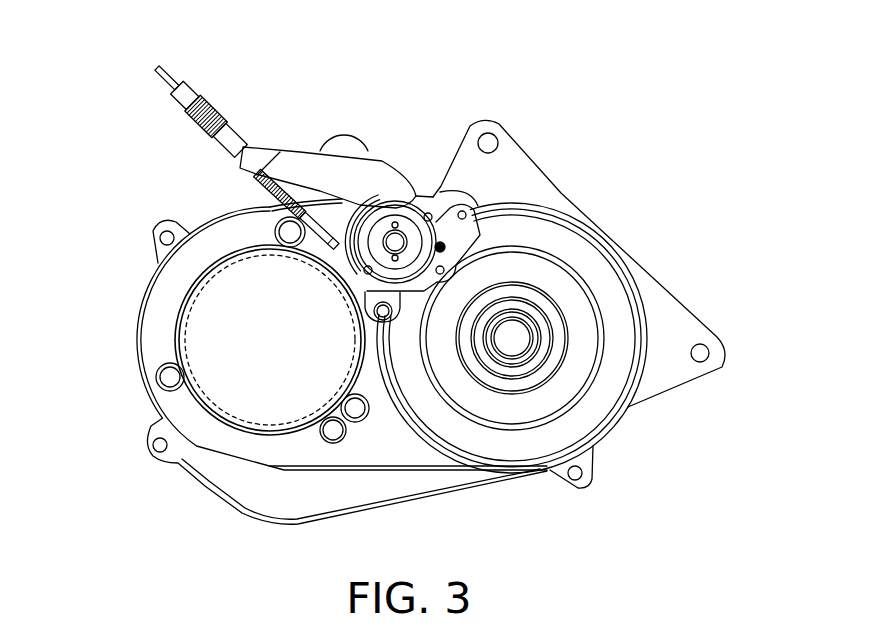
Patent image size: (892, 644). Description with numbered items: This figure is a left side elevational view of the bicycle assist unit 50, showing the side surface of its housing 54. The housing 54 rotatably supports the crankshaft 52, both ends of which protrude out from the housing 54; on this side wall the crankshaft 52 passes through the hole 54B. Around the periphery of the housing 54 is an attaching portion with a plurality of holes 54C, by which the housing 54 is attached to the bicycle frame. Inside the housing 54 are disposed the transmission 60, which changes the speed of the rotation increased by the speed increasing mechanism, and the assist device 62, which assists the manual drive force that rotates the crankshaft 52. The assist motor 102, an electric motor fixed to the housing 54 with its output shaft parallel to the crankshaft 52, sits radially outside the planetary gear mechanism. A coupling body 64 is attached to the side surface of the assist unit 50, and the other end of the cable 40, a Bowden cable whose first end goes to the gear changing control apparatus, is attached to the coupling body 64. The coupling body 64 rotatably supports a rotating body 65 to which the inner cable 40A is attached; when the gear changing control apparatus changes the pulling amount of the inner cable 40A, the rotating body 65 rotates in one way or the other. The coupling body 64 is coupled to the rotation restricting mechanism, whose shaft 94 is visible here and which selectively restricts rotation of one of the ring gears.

The cable 40 is at (178, 76).
The inner cable 40A is at (333, 258).
The assist unit 50 is at (126, 171).
The crankshaft 52 is at (537, 313).
The housing 54 is at (135, 343).
The hole 54B is at (519, 294).
The holes 54C is at (346, 156).
The transmission 60 is at (622, 206).
The assist device 62 is at (130, 395).
The coupling body 64 is at (297, 148).
The rotating body 65 is at (395, 240).
The shaft 94 is at (440, 192).
The assist motor 102 is at (177, 303).